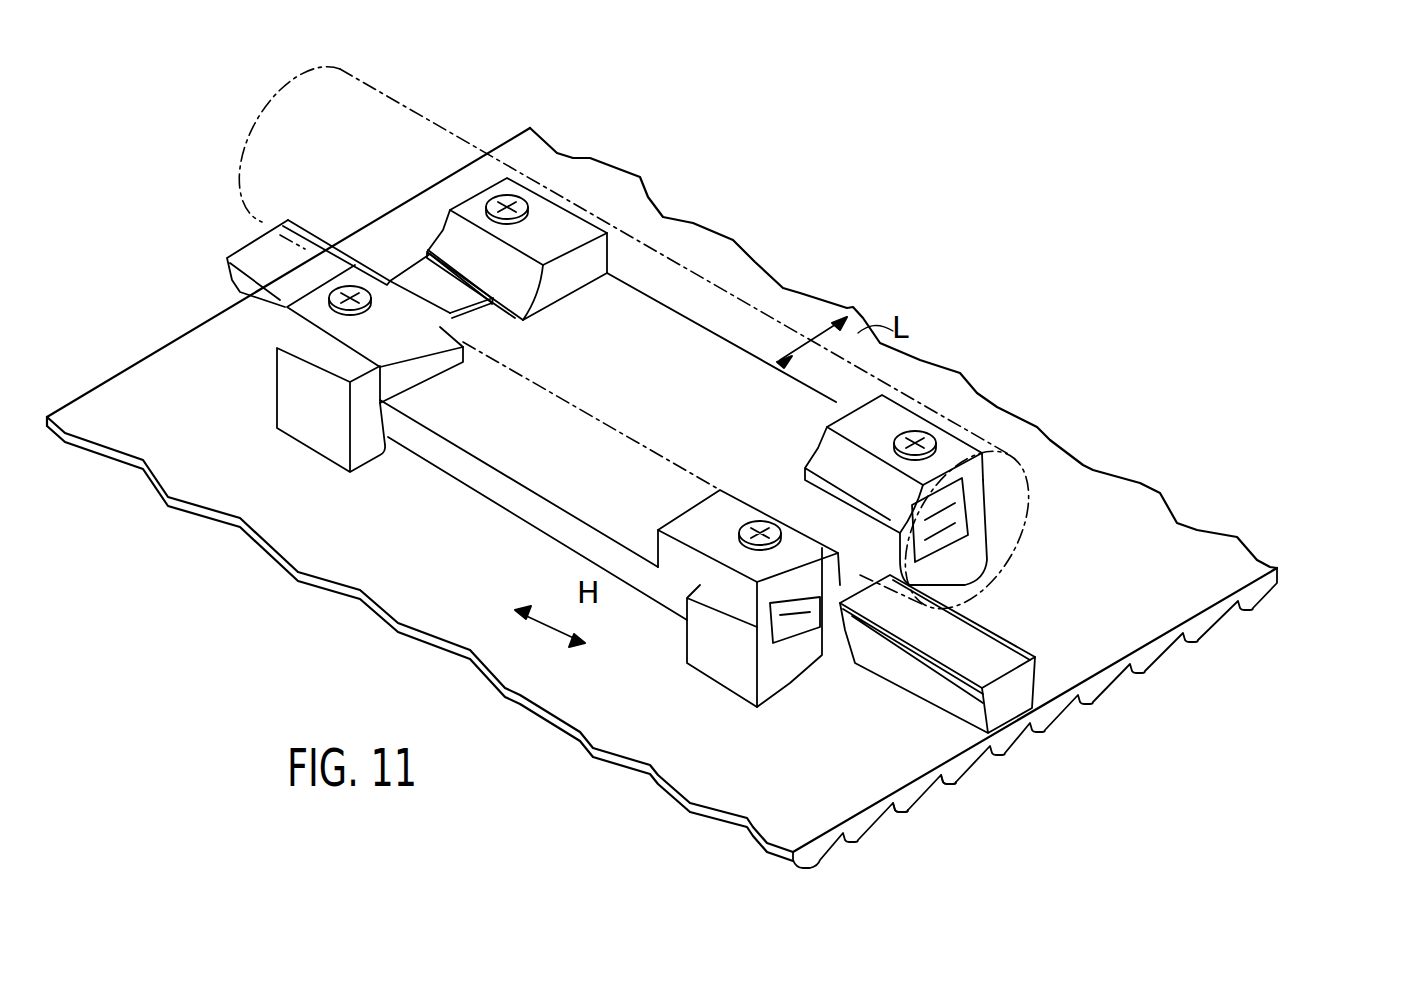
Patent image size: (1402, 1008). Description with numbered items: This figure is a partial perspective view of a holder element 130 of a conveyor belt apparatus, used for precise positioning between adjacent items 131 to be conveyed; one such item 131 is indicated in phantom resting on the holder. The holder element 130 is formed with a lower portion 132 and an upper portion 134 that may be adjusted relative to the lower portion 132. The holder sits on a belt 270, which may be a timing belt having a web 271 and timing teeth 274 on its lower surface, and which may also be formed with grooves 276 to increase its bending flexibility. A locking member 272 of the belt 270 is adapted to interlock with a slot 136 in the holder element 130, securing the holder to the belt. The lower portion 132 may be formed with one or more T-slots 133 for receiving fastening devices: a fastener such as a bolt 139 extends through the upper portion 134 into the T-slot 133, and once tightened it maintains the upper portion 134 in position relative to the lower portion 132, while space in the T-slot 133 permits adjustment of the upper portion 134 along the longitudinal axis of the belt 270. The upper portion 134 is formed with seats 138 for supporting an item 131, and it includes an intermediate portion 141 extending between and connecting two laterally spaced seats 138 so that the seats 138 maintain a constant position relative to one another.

The holder element 130 is at (1002, 366).
The item 131 is at (238, 162).
The lower portion 132 is at (288, 410).
The T-slot 133 is at (750, 658).
The upper portion 134 is at (723, 313).
The slot 136 is at (862, 610).
The seat 138 is at (450, 232).
The bolt 139 is at (523, 200).
The intermediate portion 141 is at (430, 458).
The belt 270 is at (1263, 533).
The web 271 is at (1217, 592).
The locking member 272 is at (1045, 690).
The timing teeth 274 is at (955, 780).
The grooves 276 is at (889, 812).